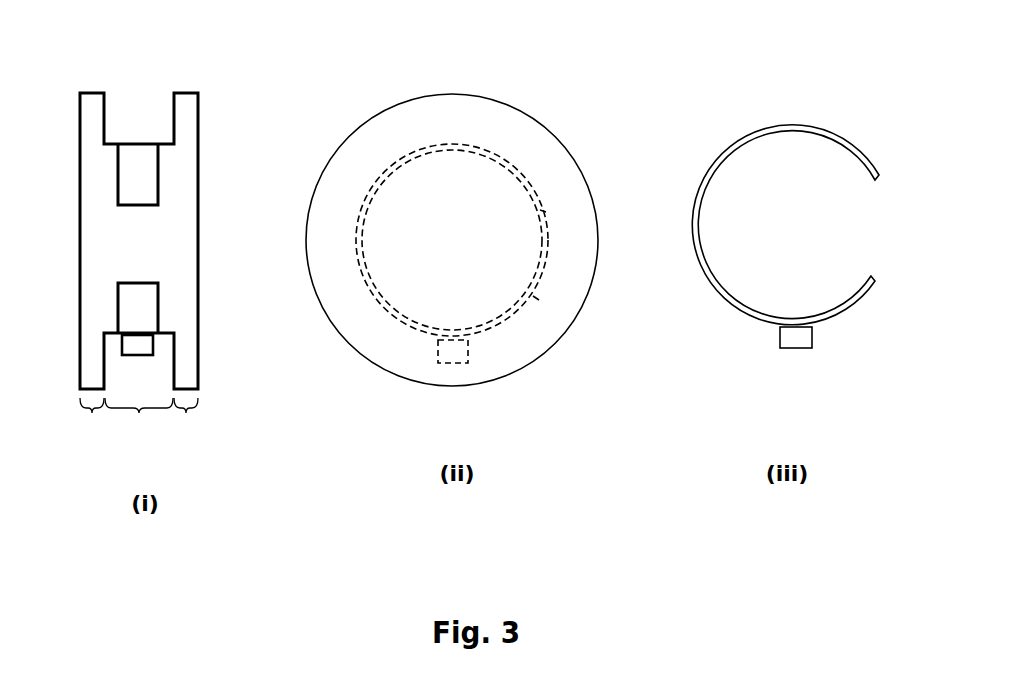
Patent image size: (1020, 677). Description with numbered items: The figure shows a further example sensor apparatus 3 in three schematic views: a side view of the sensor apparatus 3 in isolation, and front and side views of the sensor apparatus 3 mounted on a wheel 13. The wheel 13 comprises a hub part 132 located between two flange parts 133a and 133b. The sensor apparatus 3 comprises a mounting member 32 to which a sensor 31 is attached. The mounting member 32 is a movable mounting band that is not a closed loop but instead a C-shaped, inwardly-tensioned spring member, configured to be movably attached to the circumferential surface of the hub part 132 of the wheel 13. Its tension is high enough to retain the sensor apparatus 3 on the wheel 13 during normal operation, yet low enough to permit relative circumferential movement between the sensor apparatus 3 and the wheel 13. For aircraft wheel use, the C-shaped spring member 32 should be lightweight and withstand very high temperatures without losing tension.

The sensor apparatus 3 is at (98, 176).
The wheel 13 is at (90, 300).
The sensor 31 is at (133, 347).
The mounting member 32 is at (128, 186).
The hub part 132 is at (139, 424).
The flange part 133a is at (82, 424).
The flange part 133b is at (197, 424).